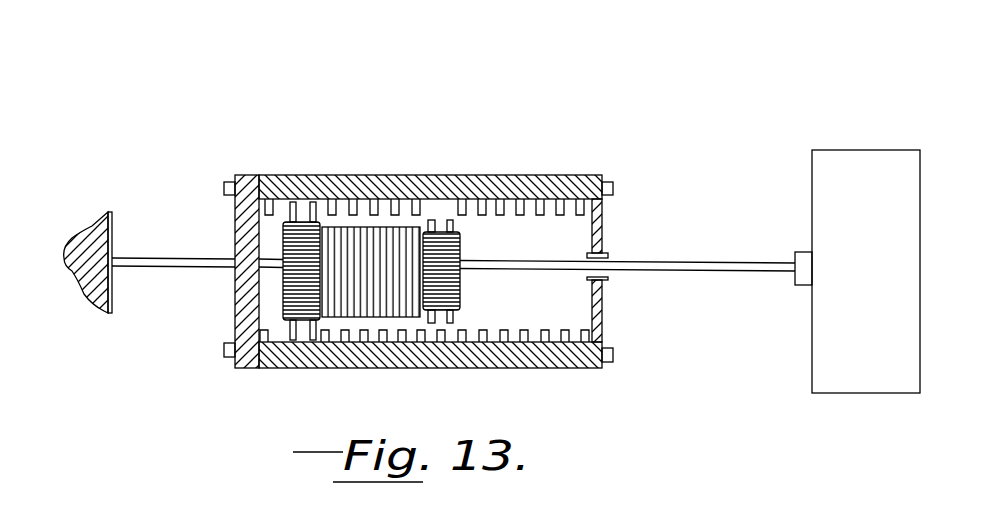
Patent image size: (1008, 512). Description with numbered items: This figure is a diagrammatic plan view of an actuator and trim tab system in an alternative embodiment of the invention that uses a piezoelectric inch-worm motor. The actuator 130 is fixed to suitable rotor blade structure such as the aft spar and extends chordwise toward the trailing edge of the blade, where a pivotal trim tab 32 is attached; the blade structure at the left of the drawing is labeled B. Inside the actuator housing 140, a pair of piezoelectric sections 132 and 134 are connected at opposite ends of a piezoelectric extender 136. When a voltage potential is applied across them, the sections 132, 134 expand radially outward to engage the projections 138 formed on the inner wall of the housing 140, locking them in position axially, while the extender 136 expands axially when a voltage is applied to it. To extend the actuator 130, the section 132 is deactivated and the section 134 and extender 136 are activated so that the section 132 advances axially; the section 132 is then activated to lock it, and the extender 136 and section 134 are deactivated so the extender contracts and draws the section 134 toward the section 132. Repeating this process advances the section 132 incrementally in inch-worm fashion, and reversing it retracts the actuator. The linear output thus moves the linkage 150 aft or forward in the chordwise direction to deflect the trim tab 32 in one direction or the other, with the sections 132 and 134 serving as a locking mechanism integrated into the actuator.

The load disk B is at (82, 232).
The trim tab 32 is at (873, 160).
The actuator 130 is at (442, 275).
The piezoelectric section 132 is at (455, 238).
The piezoelectric section 134 is at (282, 248).
The piezoelectric extender 136 is at (356, 238).
The projections 138 is at (535, 330).
The actuator housing 140 is at (582, 175).
The linkage 150 is at (703, 272).